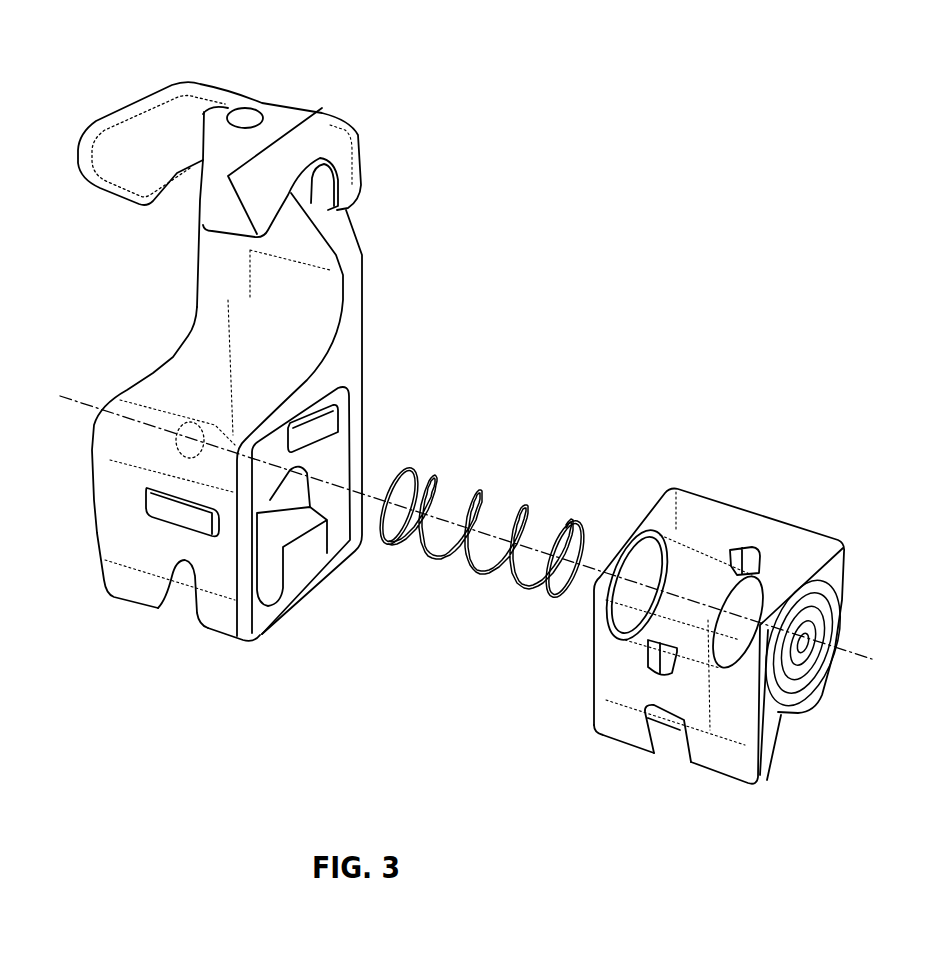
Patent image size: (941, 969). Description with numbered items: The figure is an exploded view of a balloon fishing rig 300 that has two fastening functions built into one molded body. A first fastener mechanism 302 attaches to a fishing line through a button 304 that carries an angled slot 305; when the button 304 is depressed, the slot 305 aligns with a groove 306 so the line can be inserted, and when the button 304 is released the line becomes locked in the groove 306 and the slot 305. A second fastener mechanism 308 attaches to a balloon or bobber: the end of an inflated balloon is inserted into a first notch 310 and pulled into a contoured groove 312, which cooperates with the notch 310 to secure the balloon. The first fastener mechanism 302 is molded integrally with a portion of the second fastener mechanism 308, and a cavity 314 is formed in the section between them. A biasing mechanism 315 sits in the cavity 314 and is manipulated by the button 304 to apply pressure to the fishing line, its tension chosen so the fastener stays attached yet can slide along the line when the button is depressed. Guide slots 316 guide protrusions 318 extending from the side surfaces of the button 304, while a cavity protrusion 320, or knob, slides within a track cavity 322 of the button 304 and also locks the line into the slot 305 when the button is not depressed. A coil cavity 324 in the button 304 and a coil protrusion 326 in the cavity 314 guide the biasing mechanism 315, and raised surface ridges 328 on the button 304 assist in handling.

The balloon fishing rig 300 is at (558, 151).
The first fastener mechanism 302 is at (376, 684).
The button 304 is at (790, 550).
The angled slot 305 is at (682, 737).
The groove 306 is at (180, 607).
The second fastener mechanism 308 is at (289, 113).
The first notch 310 is at (346, 208).
The contoured groove 312 is at (174, 143).
The cavity 314 is at (323, 470).
The biasing mechanism 315 is at (497, 503).
The guide slots 316 is at (160, 503).
The protrusions 318 is at (647, 670).
The cavity protrusion 320 is at (300, 553).
The track cavity 322 is at (786, 730).
The coil cavity 324 is at (687, 570).
The coil protrusion 326 is at (193, 433).
The raised surface ridges 328 is at (837, 595).